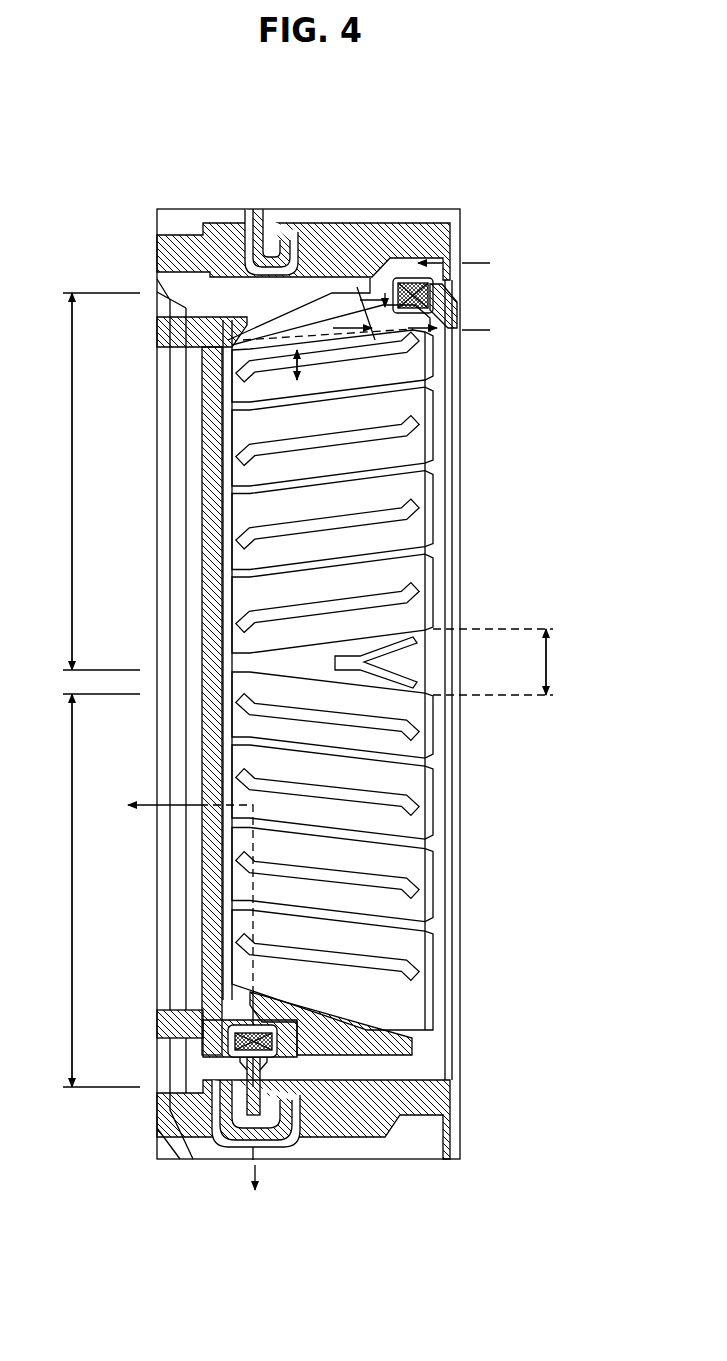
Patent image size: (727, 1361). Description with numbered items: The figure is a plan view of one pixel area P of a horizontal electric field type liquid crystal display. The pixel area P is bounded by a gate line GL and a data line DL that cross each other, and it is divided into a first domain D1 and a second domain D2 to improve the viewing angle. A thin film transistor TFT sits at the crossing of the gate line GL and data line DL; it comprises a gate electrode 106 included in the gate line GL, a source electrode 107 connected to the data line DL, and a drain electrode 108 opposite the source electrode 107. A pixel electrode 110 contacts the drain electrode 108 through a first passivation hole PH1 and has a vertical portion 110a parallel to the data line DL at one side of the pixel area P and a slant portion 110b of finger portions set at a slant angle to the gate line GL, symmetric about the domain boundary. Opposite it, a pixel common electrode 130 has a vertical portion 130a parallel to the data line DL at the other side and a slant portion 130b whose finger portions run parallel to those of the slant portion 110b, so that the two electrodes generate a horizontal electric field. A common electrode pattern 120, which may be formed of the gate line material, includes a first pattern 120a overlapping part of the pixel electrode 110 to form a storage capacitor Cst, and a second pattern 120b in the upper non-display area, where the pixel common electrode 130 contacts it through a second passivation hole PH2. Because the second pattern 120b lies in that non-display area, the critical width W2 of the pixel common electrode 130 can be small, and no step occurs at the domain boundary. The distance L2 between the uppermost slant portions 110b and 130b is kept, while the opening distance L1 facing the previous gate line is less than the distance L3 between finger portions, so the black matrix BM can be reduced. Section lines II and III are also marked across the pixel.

The pixel area P is at (116, 233).
The common electrode pattern 120 is at (370, 158).
The first pattern 120a is at (237, 317).
The second pattern 120b is at (357, 232).
The data line DL is at (180, 945).
The gate line GL is at (343, 1133).
The storage capacitor Cst is at (208, 545).
The black matrix pattern BM is at (430, 356).
The pixel electrode 110 is at (405, 362).
The vertical portion of pixel electrode 110a is at (363, 372).
The slant portion of pixel electrode 110b is at (232, 390).
The pixel common electrode 130 is at (407, 675).
The vertical portion of pixel common electrode 130a is at (428, 840).
The slant portion of pixel common electrode 130b is at (385, 862).
The first passivation hole PH1 is at (228, 1048).
The second passivation hole PH2 is at (433, 296).
The thin film transistor TFT is at (292, 1117).
The gate electrode 106 is at (245, 1100).
The source electrode 107 is at (240, 1047).
The drain electrode 108 is at (285, 1135).
The distance required to form opening L1 is at (372, 289).
The critical distance L2 is at (352, 312).
The distance between finger portions L3 is at (310, 368).
The critical width of pixel common electrode W2 is at (503, 662).
The first domain D1 is at (89, 481).
The second domain D2 is at (89, 890).
The section line II-II' II is at (181, 1008).
The section line III-III' III is at (468, 297).